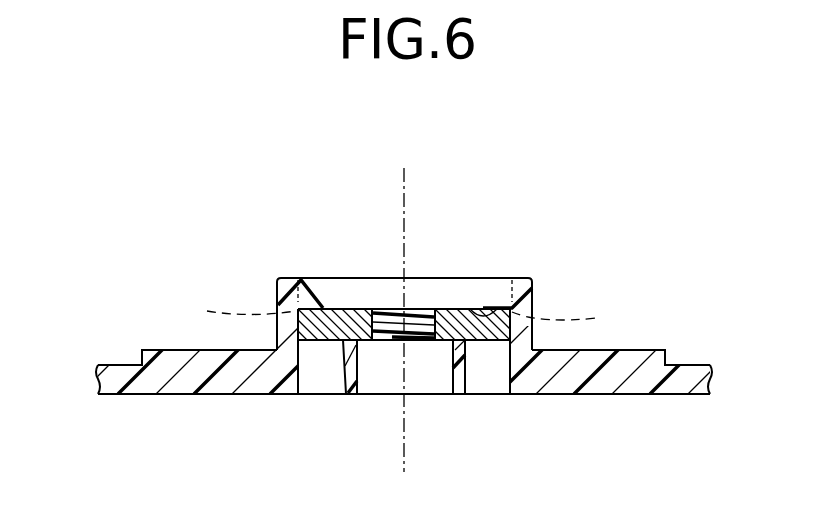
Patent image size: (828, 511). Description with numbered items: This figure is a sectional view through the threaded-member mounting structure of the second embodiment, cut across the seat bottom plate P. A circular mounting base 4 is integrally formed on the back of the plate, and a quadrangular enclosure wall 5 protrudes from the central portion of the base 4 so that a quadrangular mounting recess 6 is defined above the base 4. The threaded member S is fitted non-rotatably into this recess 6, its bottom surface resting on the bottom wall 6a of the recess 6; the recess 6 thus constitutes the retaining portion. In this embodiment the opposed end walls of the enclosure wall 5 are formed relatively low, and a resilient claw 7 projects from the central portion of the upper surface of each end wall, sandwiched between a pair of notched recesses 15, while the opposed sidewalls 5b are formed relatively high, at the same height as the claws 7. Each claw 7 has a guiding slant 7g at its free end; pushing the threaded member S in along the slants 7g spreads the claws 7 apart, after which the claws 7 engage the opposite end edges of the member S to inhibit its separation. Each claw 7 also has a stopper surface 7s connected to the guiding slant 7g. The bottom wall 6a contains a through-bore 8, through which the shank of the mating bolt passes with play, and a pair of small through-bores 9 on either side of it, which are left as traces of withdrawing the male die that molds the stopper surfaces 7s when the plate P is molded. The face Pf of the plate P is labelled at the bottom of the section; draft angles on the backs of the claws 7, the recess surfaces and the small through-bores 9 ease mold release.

The seat bottom plate P is at (152, 340).
The plate bottom face Pf is at (350, 395).
The mounting base 4 is at (665, 350).
The enclosure wall 5 is at (275, 284).
The sidewall 5b is at (482, 305).
The mounting recess 6 is at (461, 330).
The bottom wall 6a is at (458, 395).
The resilient claw 7 is at (287, 270).
The guiding slant 7g is at (300, 303).
The stopper surface 7s is at (471, 309).
The through-bore 8 is at (357, 374).
The small through-bore 9 is at (318, 380).
The notched recess 15 is at (402, 314).
The threaded member S is at (352, 300).